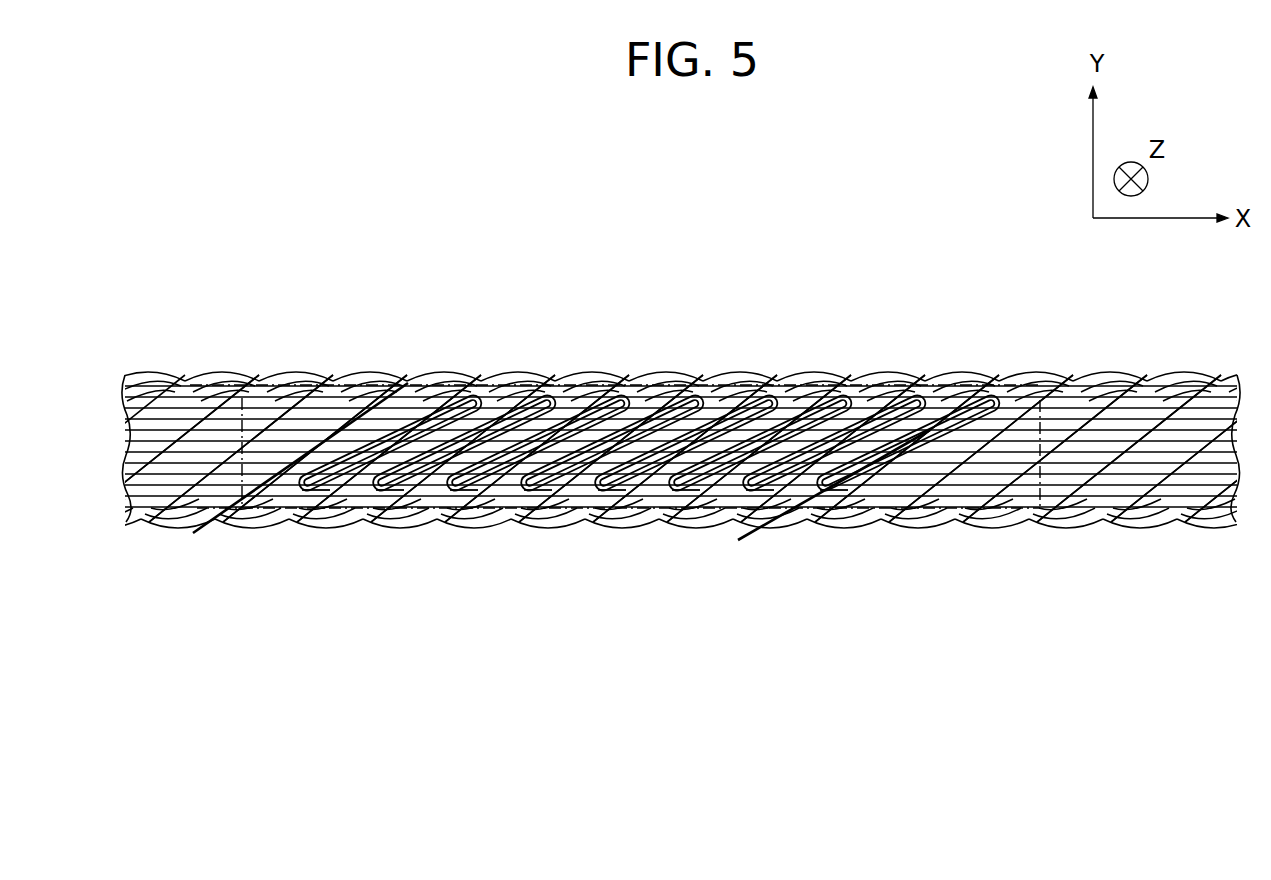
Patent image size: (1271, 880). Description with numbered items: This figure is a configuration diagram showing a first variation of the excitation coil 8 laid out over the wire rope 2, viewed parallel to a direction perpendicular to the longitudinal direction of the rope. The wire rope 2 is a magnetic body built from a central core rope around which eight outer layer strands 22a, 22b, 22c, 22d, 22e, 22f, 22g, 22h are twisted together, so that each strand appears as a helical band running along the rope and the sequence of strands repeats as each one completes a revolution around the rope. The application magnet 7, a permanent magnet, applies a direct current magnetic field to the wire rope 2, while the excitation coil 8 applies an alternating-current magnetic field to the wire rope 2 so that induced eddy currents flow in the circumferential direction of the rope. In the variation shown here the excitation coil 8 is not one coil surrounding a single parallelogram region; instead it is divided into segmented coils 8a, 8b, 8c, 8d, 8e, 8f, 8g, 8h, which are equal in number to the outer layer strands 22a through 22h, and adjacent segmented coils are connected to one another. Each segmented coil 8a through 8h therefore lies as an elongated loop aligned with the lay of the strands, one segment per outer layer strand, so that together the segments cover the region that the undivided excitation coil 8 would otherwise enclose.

The wire rope 2 is at (975, 373).
The application magnet 7 is at (207, 533).
The excitation coil 8 is at (657, 379).
The segmented coil 8a is at (477, 396).
The segmented coil 8b is at (550, 396).
The segmented coil 8c is at (623, 396).
The segmented coil 8d is at (697, 396).
The segmented coil 8e is at (771, 396).
The segmented coil 8f is at (845, 396).
The segmented coil 8g is at (919, 396).
The segmented coil 8h is at (993, 396).
The outer layer strand 22a is at (330, 468).
The outer layer strand 22b is at (404, 468).
The outer layer strand 22c is at (477, 468).
The outer layer strand 22d is at (552, 468).
The outer layer strand 22e is at (627, 468).
The outer layer strand 22f is at (173, 437).
The outer layer strand 22g is at (131, 496).
The outer layer strand 22h is at (220, 470).